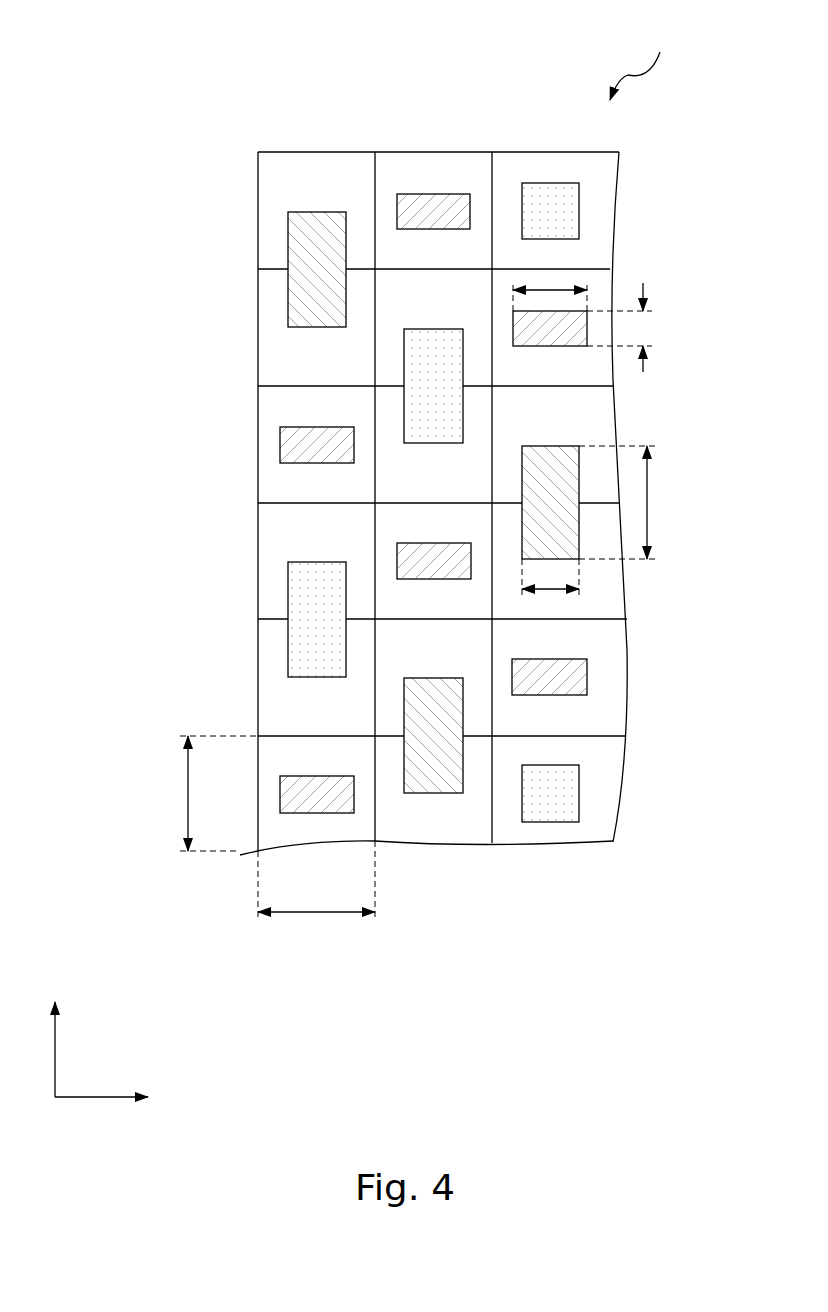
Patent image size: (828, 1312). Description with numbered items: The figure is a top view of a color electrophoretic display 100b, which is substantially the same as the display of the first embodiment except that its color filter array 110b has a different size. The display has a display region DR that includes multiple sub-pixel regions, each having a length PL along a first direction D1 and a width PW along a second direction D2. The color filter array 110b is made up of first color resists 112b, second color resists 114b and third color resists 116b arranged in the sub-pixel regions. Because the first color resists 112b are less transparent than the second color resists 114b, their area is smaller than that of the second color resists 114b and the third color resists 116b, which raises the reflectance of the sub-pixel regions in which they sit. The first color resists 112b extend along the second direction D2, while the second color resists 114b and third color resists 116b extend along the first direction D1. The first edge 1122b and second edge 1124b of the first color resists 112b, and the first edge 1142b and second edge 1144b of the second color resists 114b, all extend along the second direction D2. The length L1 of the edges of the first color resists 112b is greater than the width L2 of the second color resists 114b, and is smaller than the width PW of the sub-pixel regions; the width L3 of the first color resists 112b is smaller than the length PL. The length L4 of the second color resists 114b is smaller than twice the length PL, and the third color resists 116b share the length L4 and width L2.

The color electrophoretic display 100b is at (153, 41).
The color filter array 110b is at (590, 92).
The first color resists 112b is at (433, 203).
The second color resists 114b is at (315, 240).
The third color resists 116b is at (550, 205).
The first edge 1122b is at (543, 346).
The second edge 1124b is at (575, 311).
The first edge 1142b is at (550, 559).
The second edge 1144b is at (552, 446).
The length L1 is at (552, 292).
The width L2 is at (553, 589).
The width L3 is at (638, 327).
The length L4 is at (634, 502).
The length PL is at (201, 793).
The width PW is at (316, 895).
The display region DR is at (649, 62).
The first direction D1 is at (52, 1031).
The second direction D2 is at (127, 1098).